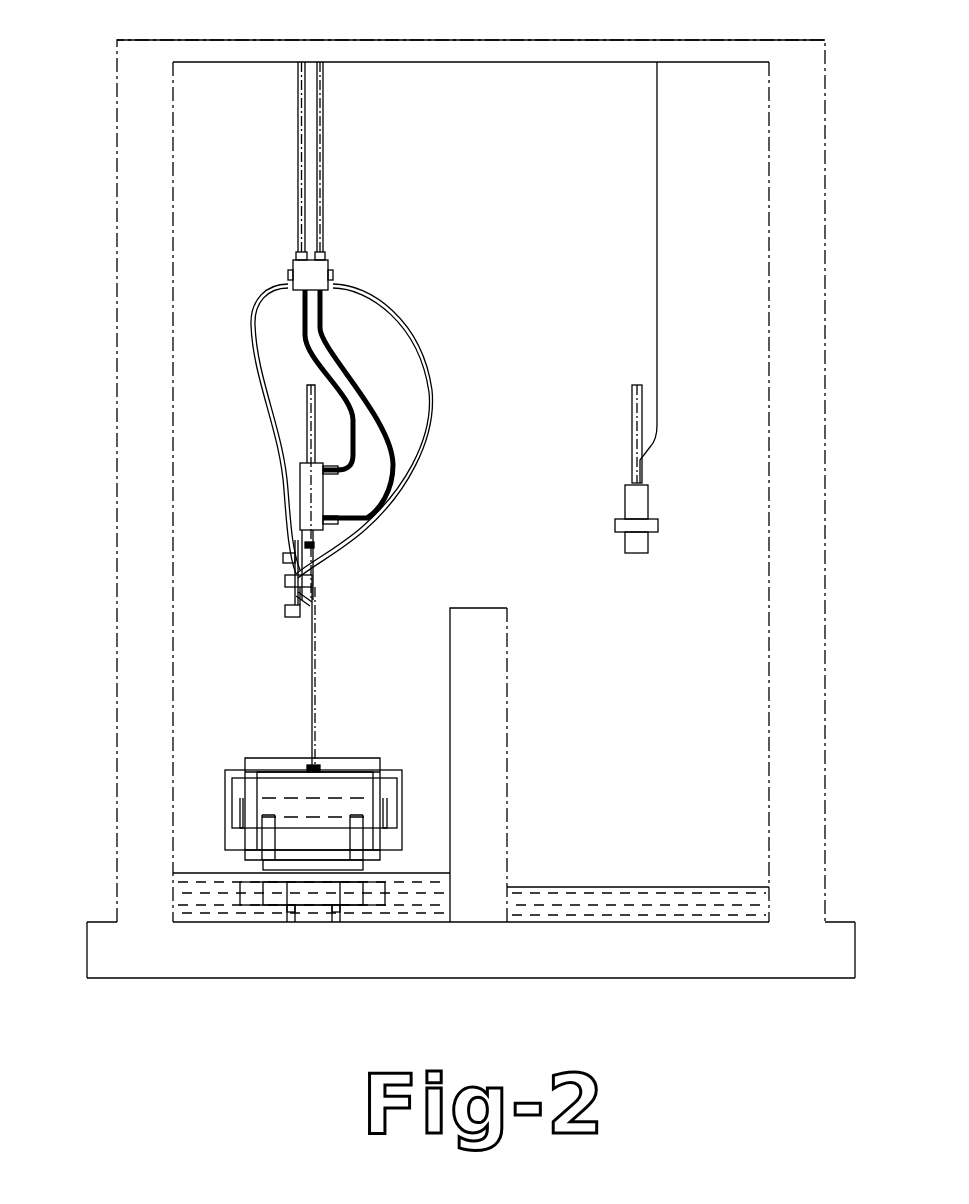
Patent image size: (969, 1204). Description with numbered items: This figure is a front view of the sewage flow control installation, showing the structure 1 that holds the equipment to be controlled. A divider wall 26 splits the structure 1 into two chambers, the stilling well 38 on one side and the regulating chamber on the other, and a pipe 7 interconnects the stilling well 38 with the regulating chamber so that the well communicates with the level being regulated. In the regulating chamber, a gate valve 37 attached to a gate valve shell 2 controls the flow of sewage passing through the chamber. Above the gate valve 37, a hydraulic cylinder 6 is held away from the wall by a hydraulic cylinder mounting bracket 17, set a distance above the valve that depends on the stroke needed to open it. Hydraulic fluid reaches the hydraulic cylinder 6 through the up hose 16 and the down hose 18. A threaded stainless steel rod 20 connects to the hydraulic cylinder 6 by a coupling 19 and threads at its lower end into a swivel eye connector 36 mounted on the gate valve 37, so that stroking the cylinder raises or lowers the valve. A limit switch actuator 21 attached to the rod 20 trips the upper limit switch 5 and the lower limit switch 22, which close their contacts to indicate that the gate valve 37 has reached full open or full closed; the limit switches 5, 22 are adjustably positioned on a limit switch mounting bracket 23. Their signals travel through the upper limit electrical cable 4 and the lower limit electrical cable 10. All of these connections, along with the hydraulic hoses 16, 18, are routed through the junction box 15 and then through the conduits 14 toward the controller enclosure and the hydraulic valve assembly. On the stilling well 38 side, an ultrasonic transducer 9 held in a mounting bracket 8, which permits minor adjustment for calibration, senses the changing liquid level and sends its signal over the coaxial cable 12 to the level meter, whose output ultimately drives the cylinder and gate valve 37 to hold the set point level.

The structure 1 is at (160, 135).
The gate valve shell 2 is at (245, 868).
The upper limit electrical cable 4 is at (258, 298).
The upper limit switch 5 is at (283, 557).
The hydraulic cylinder 6 is at (306, 490).
The pipe 7 is at (480, 893).
The ultrasonic transducer mounting bracket 8 is at (632, 385).
The ultrasonic transducer 9 is at (638, 548).
The lower limit electrical cable 10 is at (397, 312).
The ultrasonic level meter coaxial cable 12 is at (660, 447).
The conduits 14 is at (300, 195).
The junction box 15 is at (320, 270).
The hydraulic hose up 16 is at (300, 338).
The hydraulic cylinder mounting bracket 17 is at (306, 397).
The hydraulic hose down 18 is at (375, 420).
The coupling 19 is at (316, 548).
The threaded stainless steel rod 20 is at (316, 656).
The limit switch actuator 21 is at (288, 587).
The lower limit switch 22 is at (288, 618).
The limit switch mounting bracket 23 is at (304, 606).
The divider wall 26 is at (478, 775).
The swivel eye connector 36 is at (312, 766).
The gate valve 37 is at (225, 793).
The stilling well 38 is at (673, 765).